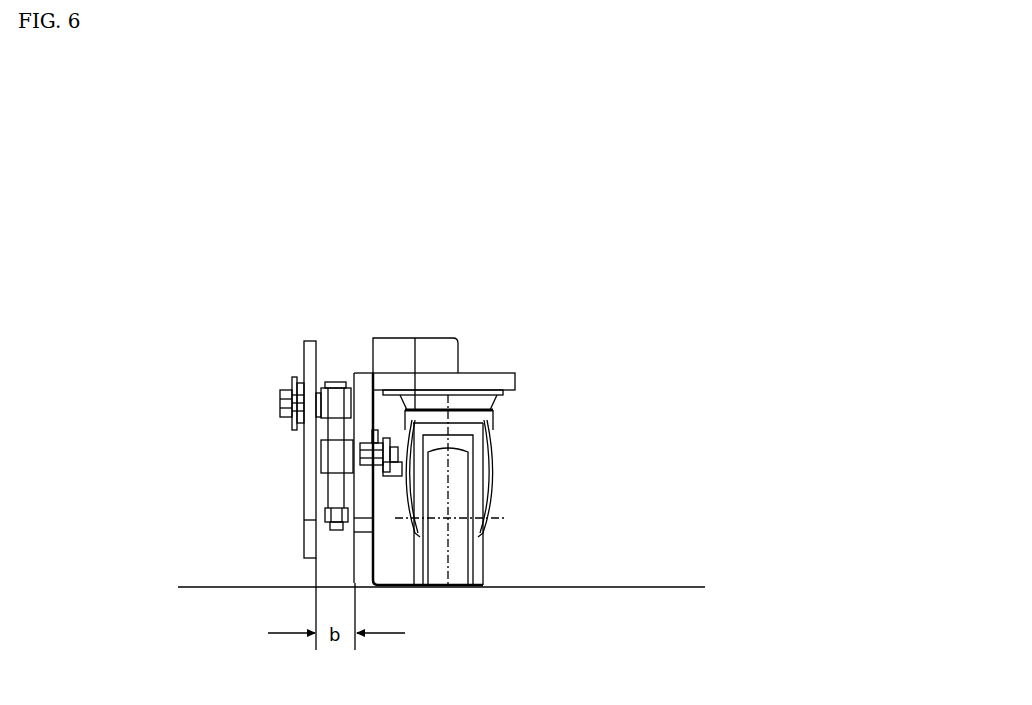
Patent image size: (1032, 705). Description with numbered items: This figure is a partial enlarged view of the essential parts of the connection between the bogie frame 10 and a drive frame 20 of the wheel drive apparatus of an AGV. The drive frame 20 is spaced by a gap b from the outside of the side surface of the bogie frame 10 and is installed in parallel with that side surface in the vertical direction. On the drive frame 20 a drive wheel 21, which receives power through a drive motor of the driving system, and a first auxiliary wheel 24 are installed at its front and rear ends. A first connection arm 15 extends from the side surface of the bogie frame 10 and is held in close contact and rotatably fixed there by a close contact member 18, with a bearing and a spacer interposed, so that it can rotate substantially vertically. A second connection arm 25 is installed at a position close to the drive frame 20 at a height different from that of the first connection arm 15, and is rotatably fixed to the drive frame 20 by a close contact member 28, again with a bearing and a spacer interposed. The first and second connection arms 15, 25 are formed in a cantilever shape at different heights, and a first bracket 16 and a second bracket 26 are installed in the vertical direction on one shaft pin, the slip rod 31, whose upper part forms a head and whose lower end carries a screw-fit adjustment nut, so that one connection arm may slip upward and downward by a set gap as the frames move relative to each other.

The bogie frame 10 is at (307, 470).
The first connection arm 15 is at (289, 397).
The first bracket 16 is at (348, 380).
The close contact member 18 is at (278, 407).
The drive frame 20 is at (373, 372).
The drive wheel 21 is at (447, 343).
The first auxiliary wheel 24 is at (453, 457).
The second connection arm 25 is at (376, 476).
The second bracket 26 is at (333, 458).
The close contact member 28 is at (396, 473).
The shaft pin (slip rod) 31 is at (330, 378).